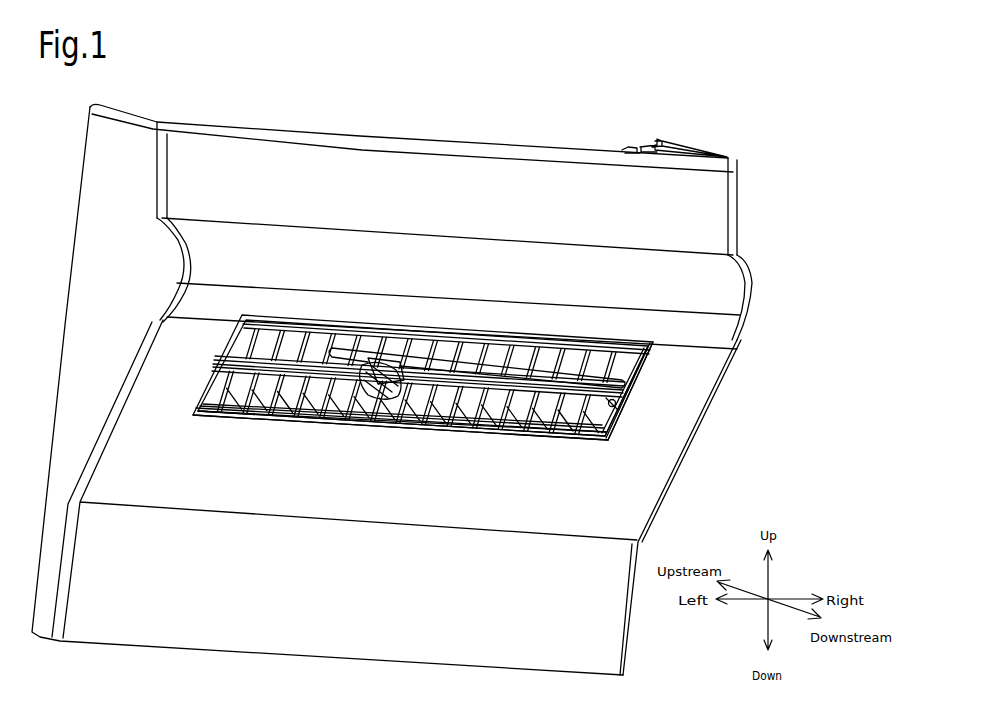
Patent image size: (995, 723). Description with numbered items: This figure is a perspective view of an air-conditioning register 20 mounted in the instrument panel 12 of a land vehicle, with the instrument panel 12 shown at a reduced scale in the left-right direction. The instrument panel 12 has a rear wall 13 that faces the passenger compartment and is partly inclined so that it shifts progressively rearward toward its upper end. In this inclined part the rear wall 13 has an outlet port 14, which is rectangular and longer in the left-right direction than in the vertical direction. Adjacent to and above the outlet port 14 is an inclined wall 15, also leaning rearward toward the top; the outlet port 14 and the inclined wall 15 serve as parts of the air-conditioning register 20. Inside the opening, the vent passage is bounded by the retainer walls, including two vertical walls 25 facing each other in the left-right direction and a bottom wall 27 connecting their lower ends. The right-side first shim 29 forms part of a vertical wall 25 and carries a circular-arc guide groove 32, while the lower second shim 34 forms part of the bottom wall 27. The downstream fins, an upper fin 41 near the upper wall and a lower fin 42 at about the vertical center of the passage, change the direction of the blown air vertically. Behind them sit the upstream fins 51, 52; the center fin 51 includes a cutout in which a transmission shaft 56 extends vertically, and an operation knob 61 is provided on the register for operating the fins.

The instrument panel 12 is at (718, 193).
The rear wall 13 is at (690, 395).
The outlet port 14 is at (618, 430).
The inclined wall 15 is at (723, 332).
The air-conditioning register 20 is at (435, 465).
The vertical walls 25 is at (713, 390).
The bottom wall 27 is at (402, 461).
The first shim 29 is at (630, 362).
The guide groove 32 is at (630, 402).
The second shim 34 is at (343, 428).
The upper fin 41 is at (537, 355).
The lower fin 42 is at (578, 365).
The fin 51 is at (367, 413).
The upstream fins 52 is at (523, 358).
The transmission shaft 56 is at (377, 342).
The operation knob 61 is at (408, 365).